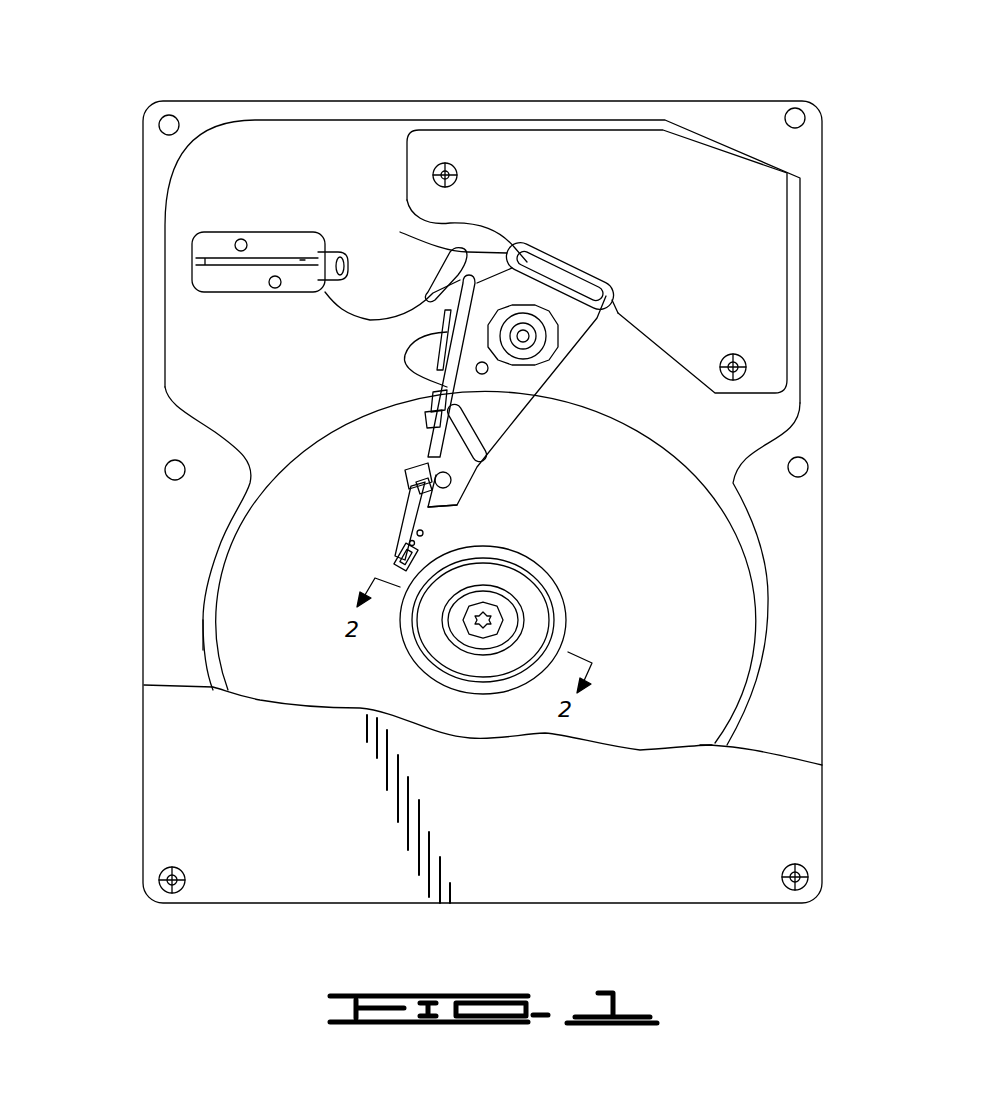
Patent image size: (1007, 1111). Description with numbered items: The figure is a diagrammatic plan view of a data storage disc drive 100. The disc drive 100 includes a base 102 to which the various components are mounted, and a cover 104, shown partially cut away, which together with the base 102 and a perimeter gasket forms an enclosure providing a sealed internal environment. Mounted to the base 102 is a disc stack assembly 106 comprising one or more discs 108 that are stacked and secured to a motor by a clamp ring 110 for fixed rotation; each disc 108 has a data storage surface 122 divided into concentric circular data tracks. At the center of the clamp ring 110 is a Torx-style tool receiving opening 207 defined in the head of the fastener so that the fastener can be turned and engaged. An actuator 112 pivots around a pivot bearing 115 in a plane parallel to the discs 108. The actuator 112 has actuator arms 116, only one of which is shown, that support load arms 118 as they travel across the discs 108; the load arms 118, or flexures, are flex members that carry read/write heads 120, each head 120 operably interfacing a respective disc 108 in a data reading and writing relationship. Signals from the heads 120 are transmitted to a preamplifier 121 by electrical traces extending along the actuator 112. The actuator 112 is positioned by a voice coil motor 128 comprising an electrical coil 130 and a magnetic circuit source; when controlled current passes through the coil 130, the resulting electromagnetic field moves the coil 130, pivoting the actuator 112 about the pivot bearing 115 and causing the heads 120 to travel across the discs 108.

The disc drive 100 is at (273, 70).
The base 102 is at (202, 347).
The cover 104 is at (198, 745).
The disc stack assembly 106 is at (212, 582).
The disc 108 is at (728, 634).
The clamp ring 110 is at (508, 580).
The actuator 112 is at (500, 403).
The pivot bearing 115 is at (528, 346).
The actuator arm 116 is at (478, 468).
The load arm 118 is at (417, 517).
The read/write head 120 is at (402, 555).
The preamplifier 121 is at (400, 370).
The data storage surface 122 is at (682, 722).
The voice coil motor 128 is at (692, 140).
The electrical coil 130 is at (440, 226).
The tool receiving opening 207 is at (493, 620).